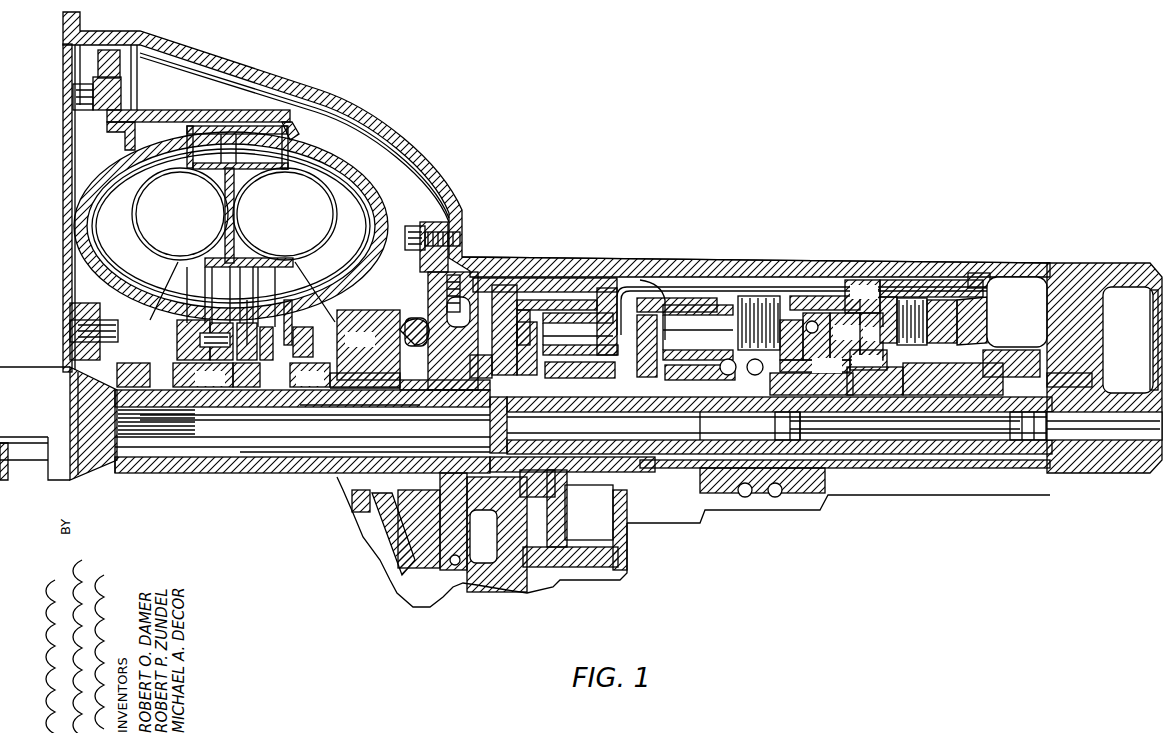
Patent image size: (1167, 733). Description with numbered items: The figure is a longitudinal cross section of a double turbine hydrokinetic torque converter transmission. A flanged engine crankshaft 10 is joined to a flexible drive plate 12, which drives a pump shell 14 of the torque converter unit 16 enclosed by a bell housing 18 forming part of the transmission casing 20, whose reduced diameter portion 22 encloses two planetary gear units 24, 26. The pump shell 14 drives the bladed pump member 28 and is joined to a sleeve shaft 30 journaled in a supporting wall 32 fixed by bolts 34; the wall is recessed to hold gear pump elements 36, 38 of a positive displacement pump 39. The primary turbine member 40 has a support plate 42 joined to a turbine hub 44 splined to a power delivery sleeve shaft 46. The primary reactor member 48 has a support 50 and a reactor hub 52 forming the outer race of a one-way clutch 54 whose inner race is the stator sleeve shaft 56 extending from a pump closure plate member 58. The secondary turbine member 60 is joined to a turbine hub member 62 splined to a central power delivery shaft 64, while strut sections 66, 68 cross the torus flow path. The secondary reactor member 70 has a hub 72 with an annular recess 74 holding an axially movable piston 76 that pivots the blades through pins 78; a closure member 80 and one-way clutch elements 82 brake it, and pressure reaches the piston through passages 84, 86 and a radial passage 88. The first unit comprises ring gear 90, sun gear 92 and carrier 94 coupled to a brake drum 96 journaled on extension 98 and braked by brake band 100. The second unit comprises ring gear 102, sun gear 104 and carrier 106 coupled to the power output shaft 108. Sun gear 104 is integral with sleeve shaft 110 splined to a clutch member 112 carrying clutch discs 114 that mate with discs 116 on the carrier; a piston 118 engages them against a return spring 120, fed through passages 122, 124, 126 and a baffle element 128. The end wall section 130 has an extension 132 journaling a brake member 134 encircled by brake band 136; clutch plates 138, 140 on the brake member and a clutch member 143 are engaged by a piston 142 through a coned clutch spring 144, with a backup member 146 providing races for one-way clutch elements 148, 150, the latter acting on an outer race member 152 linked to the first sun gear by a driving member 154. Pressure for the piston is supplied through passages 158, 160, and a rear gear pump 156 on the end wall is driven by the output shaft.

The flanged engine crankshaft 10 is at (58, 388).
The flexible drive plate 12 is at (68, 211).
The pump shell 14 is at (173, 116).
The hydrokinetic torque converter unit 16 is at (343, 120).
The transmission bell housing 18 is at (375, 129).
The transmission casing 20 is at (566, 248).
The reduced diameter casing portion 22 is at (650, 268).
The first planetary gear unit 24 is at (578, 292).
The second planetary gear unit 26 is at (676, 298).
The bladed pump member 28 is at (358, 215).
The sleeve shaft 30 is at (368, 345).
The supporting wall 32 is at (414, 318).
The bolts 34 is at (458, 238).
The gear pump element 36 is at (445, 328).
The external gear 38 is at (428, 390).
The positive displacement pump 39 is at (404, 322).
The primary bladed turbine member 40 is at (254, 162).
The support plate 42 is at (182, 208).
The turbine hub 44 is at (196, 408).
The power delivery sleeve shaft 46 is at (338, 400).
The primary reactor member 48 is at (210, 163).
The reactor support 50 is at (236, 197).
The reactor hub 52 is at (205, 340).
The one-way clutch 54 is at (216, 386).
The stator sleeve shaft 56 is at (350, 400).
The pump closure plate member 58 is at (447, 295).
The secondary turbine member 60 is at (122, 215).
The turbine hub member 62 is at (108, 440).
The central power delivery shaft 64 is at (246, 433).
The strut section 66 is at (204, 296).
The strut section 68 is at (226, 296).
The secondary reactor member 70 is at (274, 296).
The reactor hub 72 is at (247, 330).
The annular recess 74 is at (290, 322).
The axially movable piston 76 is at (285, 390).
The radially extending pins 78 is at (246, 313).
The closure member 80 is at (313, 332).
The one-way clutch elements 82 is at (315, 386).
The passage 84 is at (266, 392).
The passage 86 is at (306, 395).
The radially extending passage 88 is at (470, 540).
The ring gear 90 is at (588, 290).
The sun gear 92 is at (580, 397).
The planet gear carrier 94 is at (590, 346).
The friction brake drum 96 is at (500, 330).
The extension 98 is at (505, 378).
The brake band 100 is at (526, 277).
The ring gear 102 is at (752, 296).
The sun gear 104 is at (684, 388).
The planet gear carrier 106 is at (697, 344).
The power output shaft 108 is at (736, 388).
The sleeve shaft 110 is at (805, 388).
The clutch member 112 is at (811, 376).
The friction clutch discs 114 is at (800, 310).
The mating clutch discs 116 is at (772, 298).
The piston 118 is at (862, 296).
The return spring 120 is at (722, 388).
The fluid pressure passage 122 is at (835, 435).
The fluid pressure passage 124 is at (925, 432).
The fluid pressure passage 126 is at (1024, 398).
The baffle element 128 is at (884, 432).
The transverse end wall section 130 is at (1078, 280).
The axially extending extension 132 is at (960, 372).
The brake member 134 is at (983, 322).
The friction brake band 136 is at (968, 284).
The clutch plates 138 is at (897, 300).
The clutch plates 140 is at (925, 290).
The piston 142 is at (948, 326).
The clutch member 143 is at (900, 380).
The coned clutch spring 144 is at (984, 293).
The clutch plate backup member 146 is at (875, 336).
The one-way clutch elements 148 is at (868, 360).
The one-way clutch elements 150 is at (845, 336).
The outer race member 152 is at (835, 300).
The driving member 154 is at (702, 292).
The positive displacement gear pump 156 is at (1112, 326).
The passage 158 is at (1000, 352).
The passage 160 is at (1052, 382).